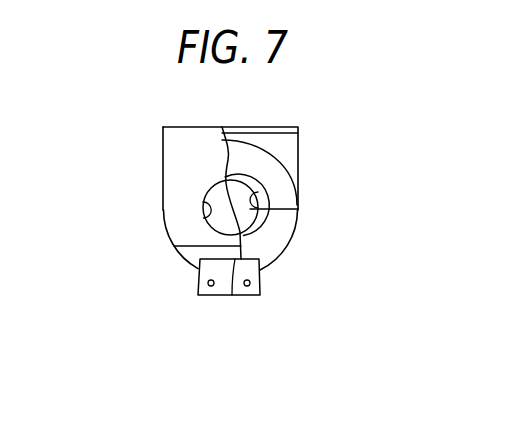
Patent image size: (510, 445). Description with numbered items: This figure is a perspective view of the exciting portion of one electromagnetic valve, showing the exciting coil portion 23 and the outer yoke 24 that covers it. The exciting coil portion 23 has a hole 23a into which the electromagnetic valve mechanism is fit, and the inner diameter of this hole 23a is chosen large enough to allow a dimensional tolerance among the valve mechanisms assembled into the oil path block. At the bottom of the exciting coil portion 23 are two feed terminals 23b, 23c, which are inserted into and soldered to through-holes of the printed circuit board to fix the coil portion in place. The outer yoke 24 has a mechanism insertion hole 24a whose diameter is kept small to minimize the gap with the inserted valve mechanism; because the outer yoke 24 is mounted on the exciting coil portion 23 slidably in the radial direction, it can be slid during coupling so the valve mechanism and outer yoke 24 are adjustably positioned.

The exciting coil portion 23 is at (280, 253).
The hole of exciting coil portion 23a is at (298, 209).
The feed terminal 23b is at (211, 287).
The feed terminal 23c is at (247, 287).
The outer yoke 24 is at (163, 173).
The mechanism insertion hole 24a is at (204, 214).